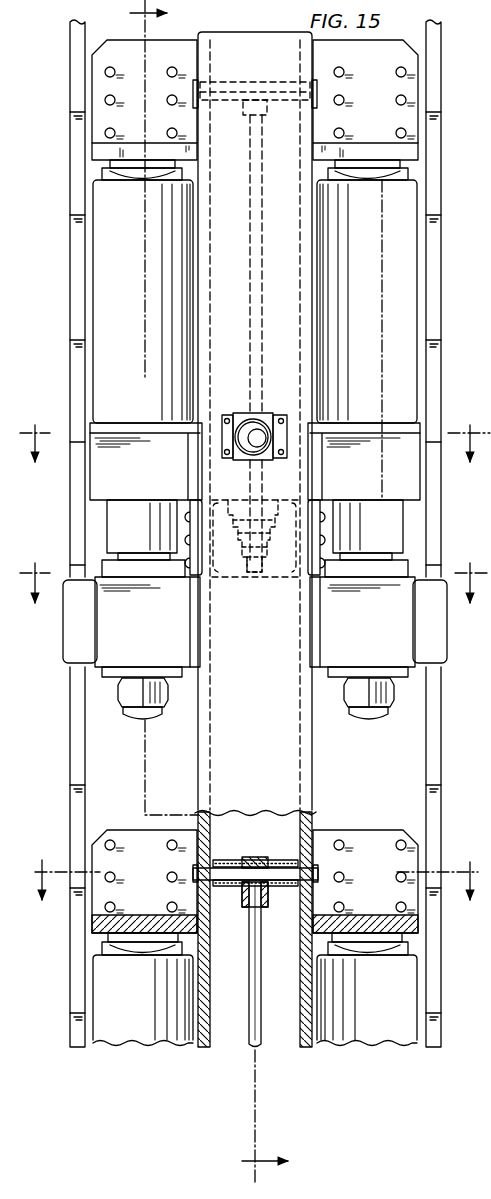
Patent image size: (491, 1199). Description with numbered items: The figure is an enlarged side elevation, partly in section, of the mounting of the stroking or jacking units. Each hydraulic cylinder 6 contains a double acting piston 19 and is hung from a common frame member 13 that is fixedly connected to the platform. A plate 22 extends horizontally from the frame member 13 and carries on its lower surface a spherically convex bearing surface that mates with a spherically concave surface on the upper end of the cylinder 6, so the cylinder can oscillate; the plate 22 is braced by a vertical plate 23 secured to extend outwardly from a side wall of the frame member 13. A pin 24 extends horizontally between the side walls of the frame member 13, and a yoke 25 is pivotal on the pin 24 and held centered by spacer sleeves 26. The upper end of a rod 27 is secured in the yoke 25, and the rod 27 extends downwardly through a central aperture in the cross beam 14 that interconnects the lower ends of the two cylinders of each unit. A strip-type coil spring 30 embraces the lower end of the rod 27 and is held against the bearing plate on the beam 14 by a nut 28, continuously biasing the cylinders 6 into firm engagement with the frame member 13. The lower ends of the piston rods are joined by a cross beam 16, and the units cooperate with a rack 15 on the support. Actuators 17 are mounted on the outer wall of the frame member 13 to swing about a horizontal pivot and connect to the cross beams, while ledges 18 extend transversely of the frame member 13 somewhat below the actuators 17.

The cylinder 6 is at (100, 285).
The frame member 13 is at (285, 746).
The cross beam 14 is at (408, 495).
The rack 15 is at (72, 1028).
The cross beam 16 is at (462, 648).
The actuator 17 is at (257, 413).
The ledge 18 is at (255, 595).
The double acting piston 19 is at (252, 895).
The plate 22 is at (135, 143).
The vertical plate 23 is at (105, 85).
The pin 24 is at (305, 107).
The yoke 25 is at (268, 902).
The spacer sleeve 26 is at (230, 860).
The rod 27 is at (262, 270).
The nut 28 is at (247, 568).
The strip-type coil spring 30 is at (267, 547).